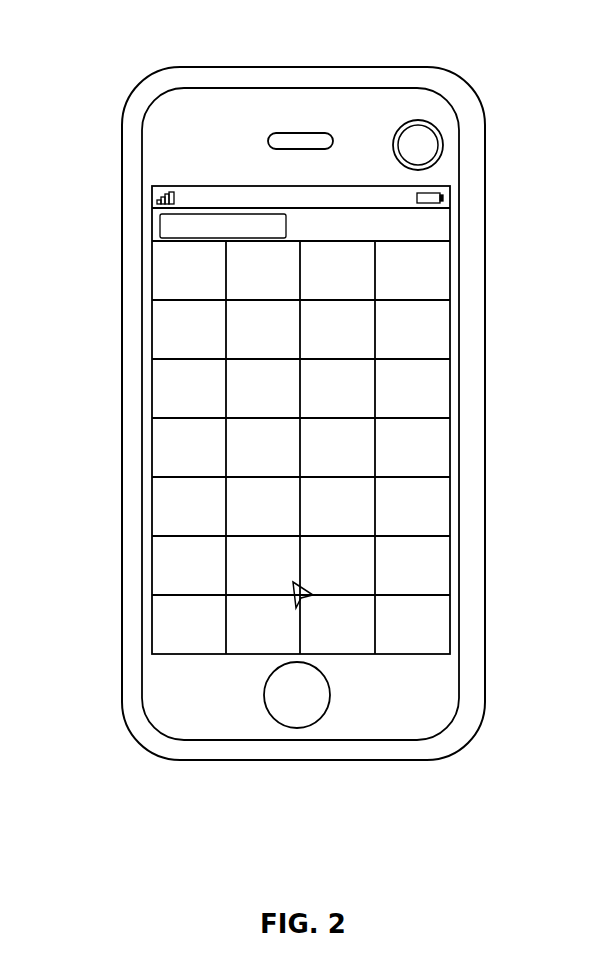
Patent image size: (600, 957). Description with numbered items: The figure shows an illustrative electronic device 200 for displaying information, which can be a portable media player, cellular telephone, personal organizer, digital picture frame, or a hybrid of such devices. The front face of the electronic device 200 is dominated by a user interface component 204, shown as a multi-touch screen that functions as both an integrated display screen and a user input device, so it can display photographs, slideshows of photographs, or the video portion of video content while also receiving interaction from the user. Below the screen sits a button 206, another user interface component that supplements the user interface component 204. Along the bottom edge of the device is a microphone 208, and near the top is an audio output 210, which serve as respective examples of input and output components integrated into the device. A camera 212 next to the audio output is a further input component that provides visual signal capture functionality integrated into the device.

The electronic device 200 is at (108, 57).
The user interface component 204 is at (430, 270).
The button 206 is at (297, 695).
The microphone 208 is at (407, 760).
The audio output 210 is at (301, 140).
The camera 212 is at (425, 138).